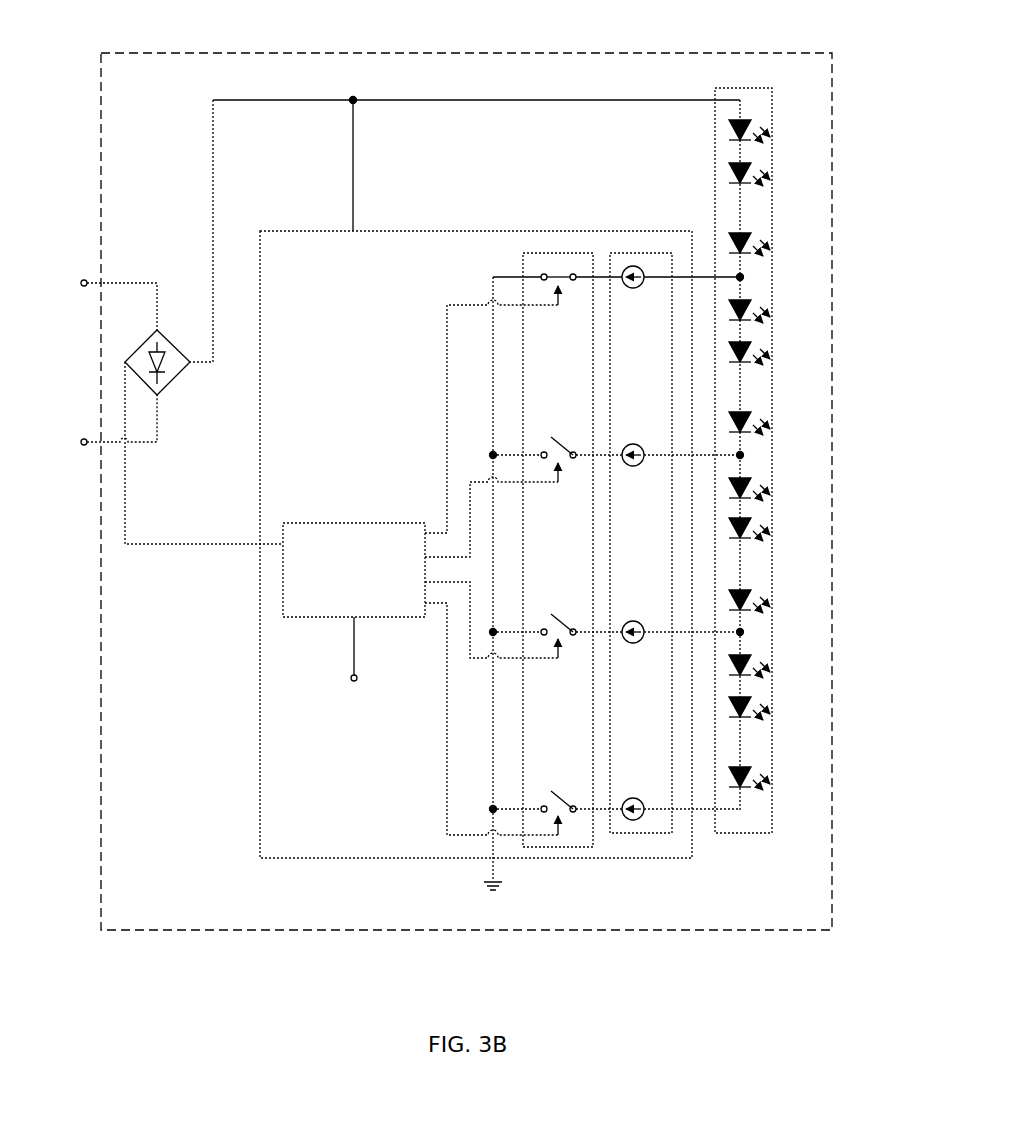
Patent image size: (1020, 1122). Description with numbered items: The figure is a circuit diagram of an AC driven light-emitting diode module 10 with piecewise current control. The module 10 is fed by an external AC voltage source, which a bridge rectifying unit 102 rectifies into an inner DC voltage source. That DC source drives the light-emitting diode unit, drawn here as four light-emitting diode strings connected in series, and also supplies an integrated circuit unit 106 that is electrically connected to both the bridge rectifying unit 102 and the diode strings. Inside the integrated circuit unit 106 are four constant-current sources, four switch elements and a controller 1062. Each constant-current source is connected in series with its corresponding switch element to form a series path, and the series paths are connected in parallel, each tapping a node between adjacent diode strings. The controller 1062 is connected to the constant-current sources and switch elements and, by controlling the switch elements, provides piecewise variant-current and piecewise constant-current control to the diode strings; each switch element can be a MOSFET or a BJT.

The light-emitting diode module 10 is at (455, 57).
The bridge rectifying unit 102 is at (170, 378).
The integrated circuit unit 106 is at (477, 232).
The controller 1062 is at (353, 523).